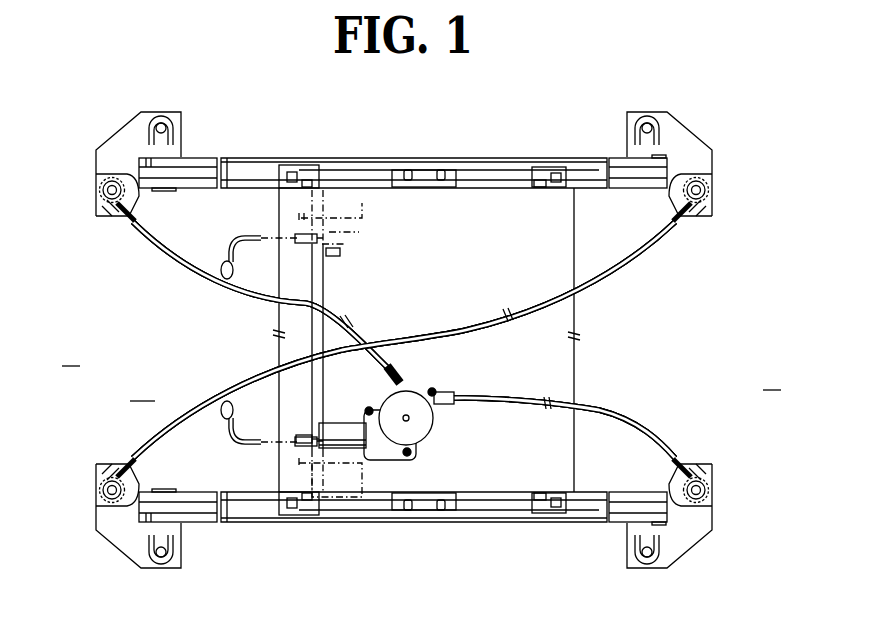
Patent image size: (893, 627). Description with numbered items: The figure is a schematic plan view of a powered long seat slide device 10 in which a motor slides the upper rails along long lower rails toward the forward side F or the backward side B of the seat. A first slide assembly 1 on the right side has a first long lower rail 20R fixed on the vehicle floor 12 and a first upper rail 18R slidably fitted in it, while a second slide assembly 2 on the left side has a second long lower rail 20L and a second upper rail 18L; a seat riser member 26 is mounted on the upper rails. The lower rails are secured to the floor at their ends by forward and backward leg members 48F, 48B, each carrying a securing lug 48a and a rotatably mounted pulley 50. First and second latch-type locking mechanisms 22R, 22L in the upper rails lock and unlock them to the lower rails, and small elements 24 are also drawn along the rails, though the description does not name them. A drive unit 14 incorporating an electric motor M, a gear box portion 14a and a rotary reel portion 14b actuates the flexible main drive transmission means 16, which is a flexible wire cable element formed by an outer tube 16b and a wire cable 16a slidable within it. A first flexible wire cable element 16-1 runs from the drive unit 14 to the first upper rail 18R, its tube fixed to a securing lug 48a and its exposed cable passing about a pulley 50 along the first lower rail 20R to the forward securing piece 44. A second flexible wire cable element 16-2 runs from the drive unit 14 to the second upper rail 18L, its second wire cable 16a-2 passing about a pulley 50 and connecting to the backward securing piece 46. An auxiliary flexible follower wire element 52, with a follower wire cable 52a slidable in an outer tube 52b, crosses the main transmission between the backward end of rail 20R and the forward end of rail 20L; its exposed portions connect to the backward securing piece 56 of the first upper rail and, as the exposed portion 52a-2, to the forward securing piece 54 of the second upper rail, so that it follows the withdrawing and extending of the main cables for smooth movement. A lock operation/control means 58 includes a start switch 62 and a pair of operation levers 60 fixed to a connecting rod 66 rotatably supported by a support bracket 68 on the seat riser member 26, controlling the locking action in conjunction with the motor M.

The first slide assembly 1 is at (599, 121).
The second slide assembly 2 is at (572, 555).
The seat slide device 10 is at (776, 237).
The vehicle floor 12 is at (143, 390).
The drive unit 14 is at (404, 419).
The gear box portion 14a is at (383, 452).
The rotary reel portion 14b is at (414, 394).
The flexible main drive transmission means 16 is at (358, 330).
The first flexible wire cable element 16-1 is at (214, 283).
The second flexible wire cable element 16-2 is at (624, 414).
The wire cable 16a is at (100, 222).
The second wire cable 16a-2 is at (621, 522).
The outer tube 16b is at (187, 265).
The first upper rail 18R is at (485, 168).
The second upper rail 18L is at (482, 515).
The first long lower rail 20R is at (229, 154).
The second long lower rail 20L is at (201, 491).
The first latch-type locking mechanism 22R is at (439, 191).
The second latch-type locking mechanism 22L is at (429, 491).
The guide roller / tab 24 is at (311, 178).
The seat riser member 26 is at (579, 327).
The forward securing piece 44 is at (289, 170).
The backward securing piece 46 is at (550, 515).
The forward leg member 48F is at (124, 140).
The backward leg member 48B is at (679, 128).
The securing lug 48a is at (130, 198).
The pulley 50 is at (99, 188).
The auxiliary flexible follower wire element 52 is at (480, 328).
The follower wire cable 52a is at (679, 170).
The another exposed portion of follower wire cable 52a-2 is at (257, 508).
The outer tube 52b is at (631, 266).
The forward securing piece 54 is at (297, 516).
The backward securing piece 56 is at (561, 170).
The lock operation/control means 58 is at (342, 255).
The operation lever 60 is at (252, 234).
The start switch 62 is at (342, 232).
The connecting rod 66 is at (326, 378).
The support bracket 68 is at (366, 215).
The forward side F is at (71, 355).
The backward side B is at (772, 379).
The electric motor M is at (345, 430).